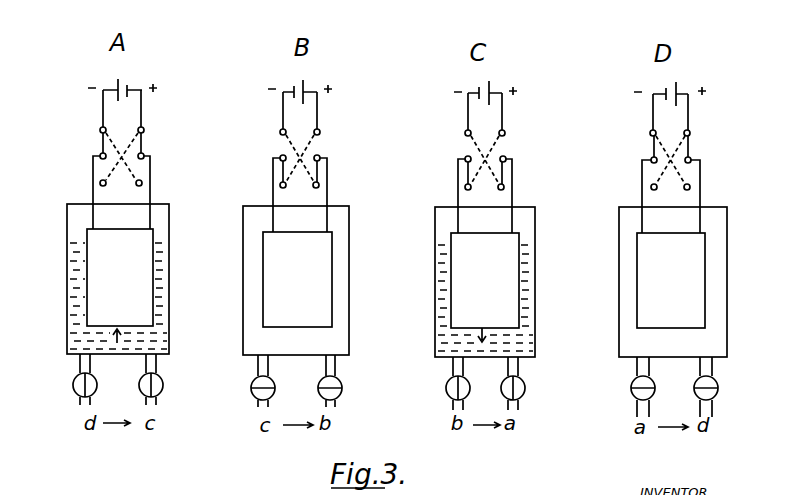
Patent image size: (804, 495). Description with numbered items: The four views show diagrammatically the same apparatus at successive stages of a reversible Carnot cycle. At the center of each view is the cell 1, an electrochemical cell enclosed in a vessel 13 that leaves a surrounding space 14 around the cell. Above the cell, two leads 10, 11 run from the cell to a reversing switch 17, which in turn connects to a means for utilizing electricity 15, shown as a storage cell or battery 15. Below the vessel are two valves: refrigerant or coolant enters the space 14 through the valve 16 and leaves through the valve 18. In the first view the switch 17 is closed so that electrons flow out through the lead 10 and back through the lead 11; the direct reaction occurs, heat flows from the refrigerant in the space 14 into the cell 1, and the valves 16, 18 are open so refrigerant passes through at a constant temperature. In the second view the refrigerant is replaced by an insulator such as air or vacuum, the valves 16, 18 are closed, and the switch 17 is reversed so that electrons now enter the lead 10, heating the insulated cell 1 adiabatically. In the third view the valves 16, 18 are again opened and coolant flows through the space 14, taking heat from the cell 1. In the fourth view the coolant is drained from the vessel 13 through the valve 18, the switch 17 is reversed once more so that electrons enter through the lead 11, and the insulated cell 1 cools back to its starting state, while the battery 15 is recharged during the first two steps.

In FIG. 3A, the cell 1 is at (137, 287).
In FIG. 3B, the cell 1 is at (318, 295).
In FIG. 3C, the cell 1 is at (507, 295).
In FIG. 3D, the cell 1 is at (690, 285).
In FIG. 3A, the lead 10 is at (94, 215).
In FIG. 3B, the lead 10 is at (274, 218).
In FIG. 3C, the lead 10 is at (459, 218).
In FIG. 3D, the lead 10 is at (643, 220).
In FIG. 3A, the lead 11 is at (149, 215).
In FIG. 3B, the lead 11 is at (326, 218).
In FIG. 3C, the lead 11 is at (511, 218).
In FIG. 3D, the lead 11 is at (699, 220).
In FIG. 3A, the vessel 13 is at (172, 232).
In FIG. 3B, the vessel 13 is at (352, 270).
In FIG. 3C, the vessel 13 is at (532, 270).
In FIG. 3D, the vessel 13 is at (728, 252).
In FIG. 3A, the space 14 is at (163, 306).
In FIG. 3B, the space 14 is at (340, 317).
In FIG. 3C, the space 14 is at (523, 252).
In FIG. 3D, the space 14 is at (713, 267).
In FIG. 3A, the means for utilizing electricity 15 is at (118, 82).
In FIG. 3B, the means for utilizing electricity 15 is at (300, 83).
In FIG. 3C, the means for utilizing electricity 15 is at (487, 86).
In FIG. 3D, the means for utilizing electricity 15 is at (668, 86).
In FIG. 3A, the valve 16 is at (77, 392).
In FIG. 3B, the valve 16 is at (257, 395).
In FIG. 3C, the valve 16 is at (467, 382).
In FIG. 3D, the valve 16 is at (650, 382).
In FIG. 3A, the reversing switch 17 is at (124, 146).
In FIG. 3B, the reversing switch 17 is at (298, 148).
In FIG. 3C, the reversing switch 17 is at (488, 147).
In FIG. 3D, the reversing switch 17 is at (673, 146).
In FIG. 3A, the valve 18 is at (155, 392).
In FIG. 3B, the valve 18 is at (335, 395).
In FIG. 3C, the valve 18 is at (525, 388).
In FIG. 3D, the valve 18 is at (717, 387).